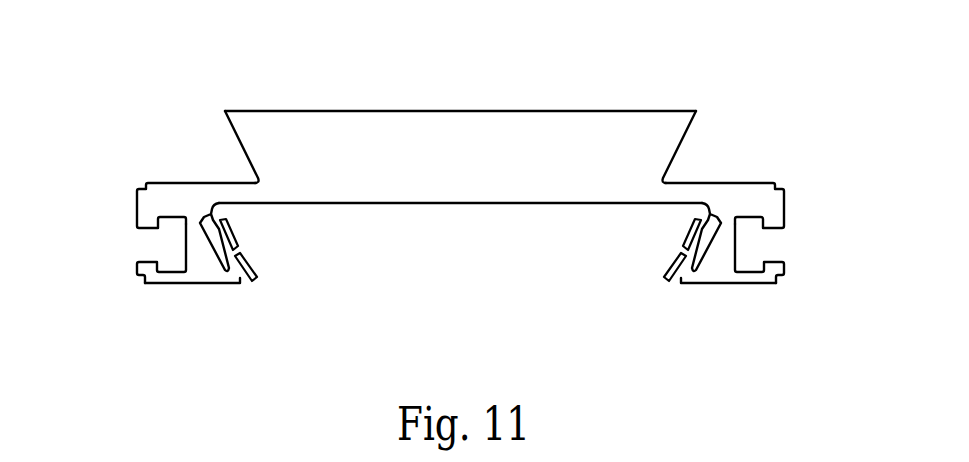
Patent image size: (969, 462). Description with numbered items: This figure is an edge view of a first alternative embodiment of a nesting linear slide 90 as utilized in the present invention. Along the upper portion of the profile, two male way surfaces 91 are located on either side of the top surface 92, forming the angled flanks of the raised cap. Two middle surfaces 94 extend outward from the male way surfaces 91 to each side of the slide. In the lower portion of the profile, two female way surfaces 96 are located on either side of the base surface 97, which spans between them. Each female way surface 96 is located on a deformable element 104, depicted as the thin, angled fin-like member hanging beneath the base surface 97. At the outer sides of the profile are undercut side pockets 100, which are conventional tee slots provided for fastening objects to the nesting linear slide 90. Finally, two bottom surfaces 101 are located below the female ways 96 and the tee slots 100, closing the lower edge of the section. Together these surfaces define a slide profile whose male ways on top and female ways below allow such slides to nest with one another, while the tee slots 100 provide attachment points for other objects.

The nesting linear slide 90 is at (360, 66).
The male way surface 91 is at (240, 143).
The top surface 92 is at (585, 110).
The middle surface 94 is at (175, 182).
The female way surface 96 is at (235, 232).
The base surface 97 is at (520, 203).
The undercut side pocket 100 is at (182, 245).
The bottom surface 101 is at (185, 285).
The deformable element 104 is at (290, 268).